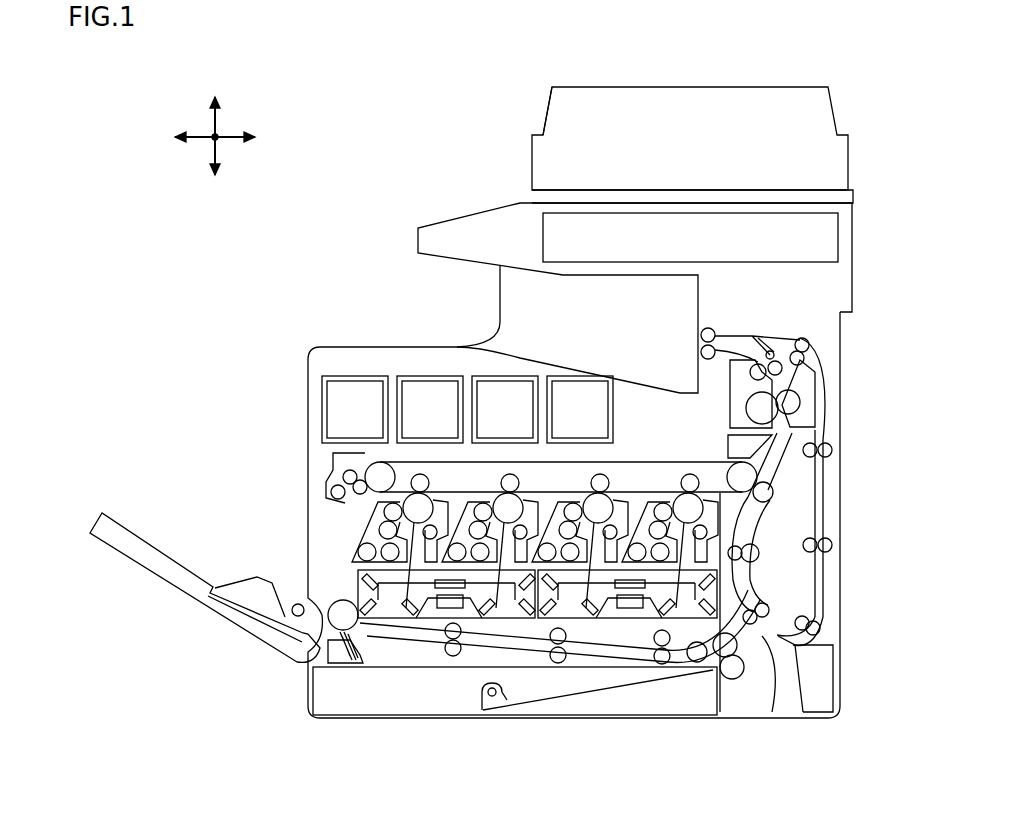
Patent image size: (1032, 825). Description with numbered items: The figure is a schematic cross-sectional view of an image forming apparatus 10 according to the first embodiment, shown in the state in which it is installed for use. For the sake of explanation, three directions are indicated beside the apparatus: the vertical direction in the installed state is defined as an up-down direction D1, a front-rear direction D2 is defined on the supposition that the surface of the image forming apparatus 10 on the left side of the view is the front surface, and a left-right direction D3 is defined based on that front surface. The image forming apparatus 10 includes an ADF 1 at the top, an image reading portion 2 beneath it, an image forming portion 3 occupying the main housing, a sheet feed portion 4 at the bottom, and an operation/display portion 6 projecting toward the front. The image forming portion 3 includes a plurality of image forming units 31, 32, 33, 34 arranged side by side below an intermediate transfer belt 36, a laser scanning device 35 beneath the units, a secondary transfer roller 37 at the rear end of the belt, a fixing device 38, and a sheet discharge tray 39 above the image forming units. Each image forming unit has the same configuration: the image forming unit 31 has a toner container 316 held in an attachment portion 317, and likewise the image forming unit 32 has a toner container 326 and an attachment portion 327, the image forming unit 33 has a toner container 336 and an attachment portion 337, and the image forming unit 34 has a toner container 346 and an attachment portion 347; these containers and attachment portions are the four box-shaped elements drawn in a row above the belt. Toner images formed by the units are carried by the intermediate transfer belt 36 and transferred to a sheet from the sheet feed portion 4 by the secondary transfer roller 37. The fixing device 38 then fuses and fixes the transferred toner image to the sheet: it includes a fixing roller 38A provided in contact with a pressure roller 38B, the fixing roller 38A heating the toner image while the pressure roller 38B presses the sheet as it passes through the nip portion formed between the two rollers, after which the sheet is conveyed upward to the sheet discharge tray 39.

The ADF 1 is at (857, 130).
The image reading portion 2 is at (857, 245).
The image forming portion 3 is at (320, 357).
The sheet feed portion 4 is at (313, 693).
The operation/display portion 6 is at (452, 205).
The image forming apparatus 10 is at (427, 116).
The image forming unit 31 is at (437, 481).
The image forming unit 32 is at (526, 481).
The image forming unit 33 is at (616, 483).
The image forming unit 34 is at (696, 494).
The laser scanning device 35 is at (358, 582).
The intermediate transfer belt 36 is at (625, 458).
The secondary transfer roller 37 is at (765, 503).
The fixing device 38 is at (808, 384).
The fixing roller 38A is at (733, 405).
The pressure roller 38B is at (802, 398).
The sheet discharge tray 39 is at (640, 378).
The toner container 316 is at (373, 382).
The attachment portion 317 is at (347, 376).
The toner container 326 is at (448, 382).
The attachment portion 327 is at (422, 376).
The toner container 336 is at (523, 382).
The attachment portion 337 is at (490, 377).
The toner container 346 is at (597, 382).
The attachment portion 347 is at (572, 377).
The up-down direction D1 is at (213, 127).
The front-rear direction D2 is at (205, 140).
The left-right direction D3 is at (220, 140).